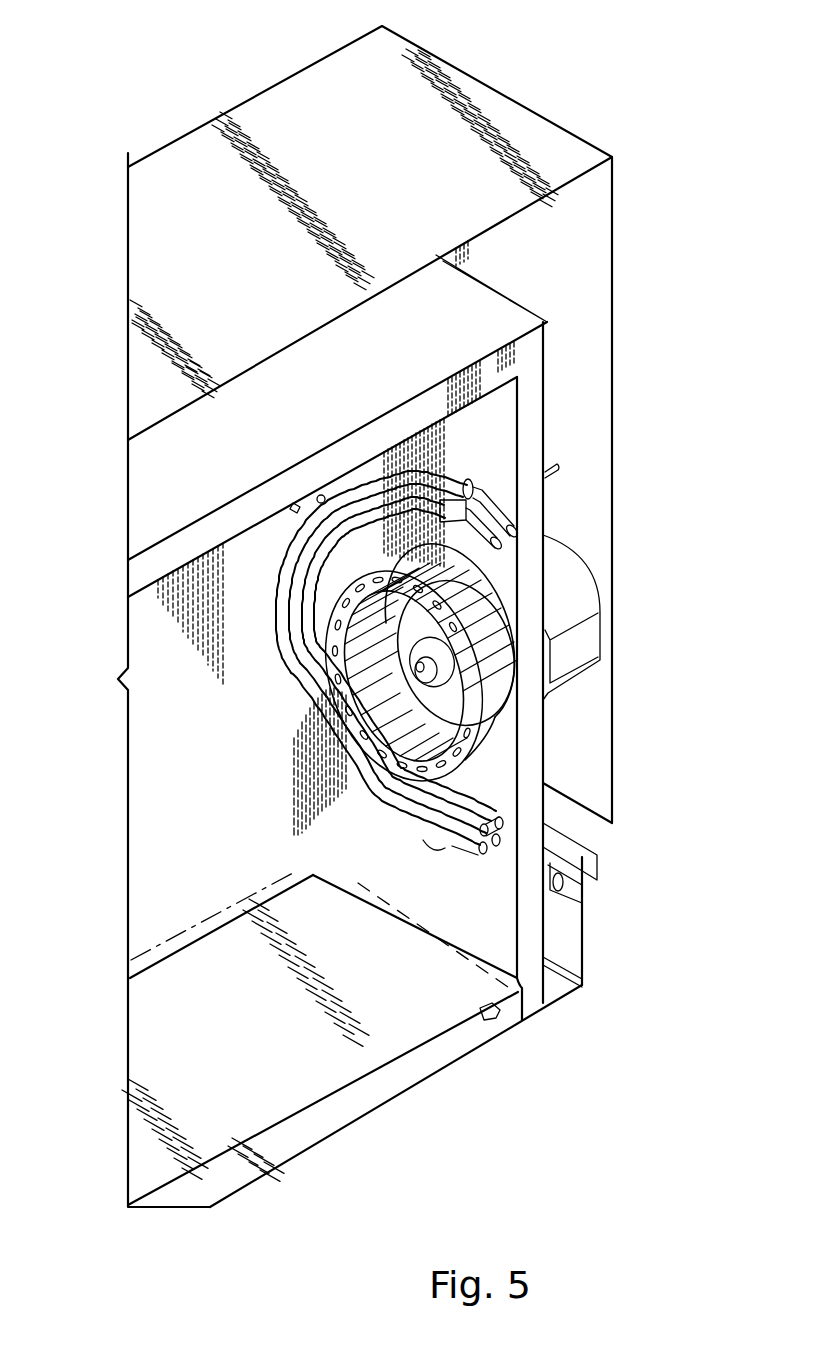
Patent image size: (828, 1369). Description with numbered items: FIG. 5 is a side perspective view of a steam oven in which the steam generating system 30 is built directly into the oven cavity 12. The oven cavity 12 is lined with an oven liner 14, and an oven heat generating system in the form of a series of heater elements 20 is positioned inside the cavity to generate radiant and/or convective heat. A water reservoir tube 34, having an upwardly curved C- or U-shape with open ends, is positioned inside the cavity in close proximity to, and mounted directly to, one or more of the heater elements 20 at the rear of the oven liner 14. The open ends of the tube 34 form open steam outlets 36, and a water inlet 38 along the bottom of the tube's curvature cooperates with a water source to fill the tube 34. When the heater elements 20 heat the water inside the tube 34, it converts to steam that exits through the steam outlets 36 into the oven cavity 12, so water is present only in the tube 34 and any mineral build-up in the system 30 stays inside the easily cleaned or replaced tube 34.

The oven cavity 12 is at (215, 771).
The oven liner 14 is at (494, 918).
The heater elements 20 is at (468, 488).
The system 30 is at (410, 821).
The water reservoir tube 34 is at (463, 845).
The open steam outlets 36 is at (320, 496).
The water inlet 38 is at (437, 853).